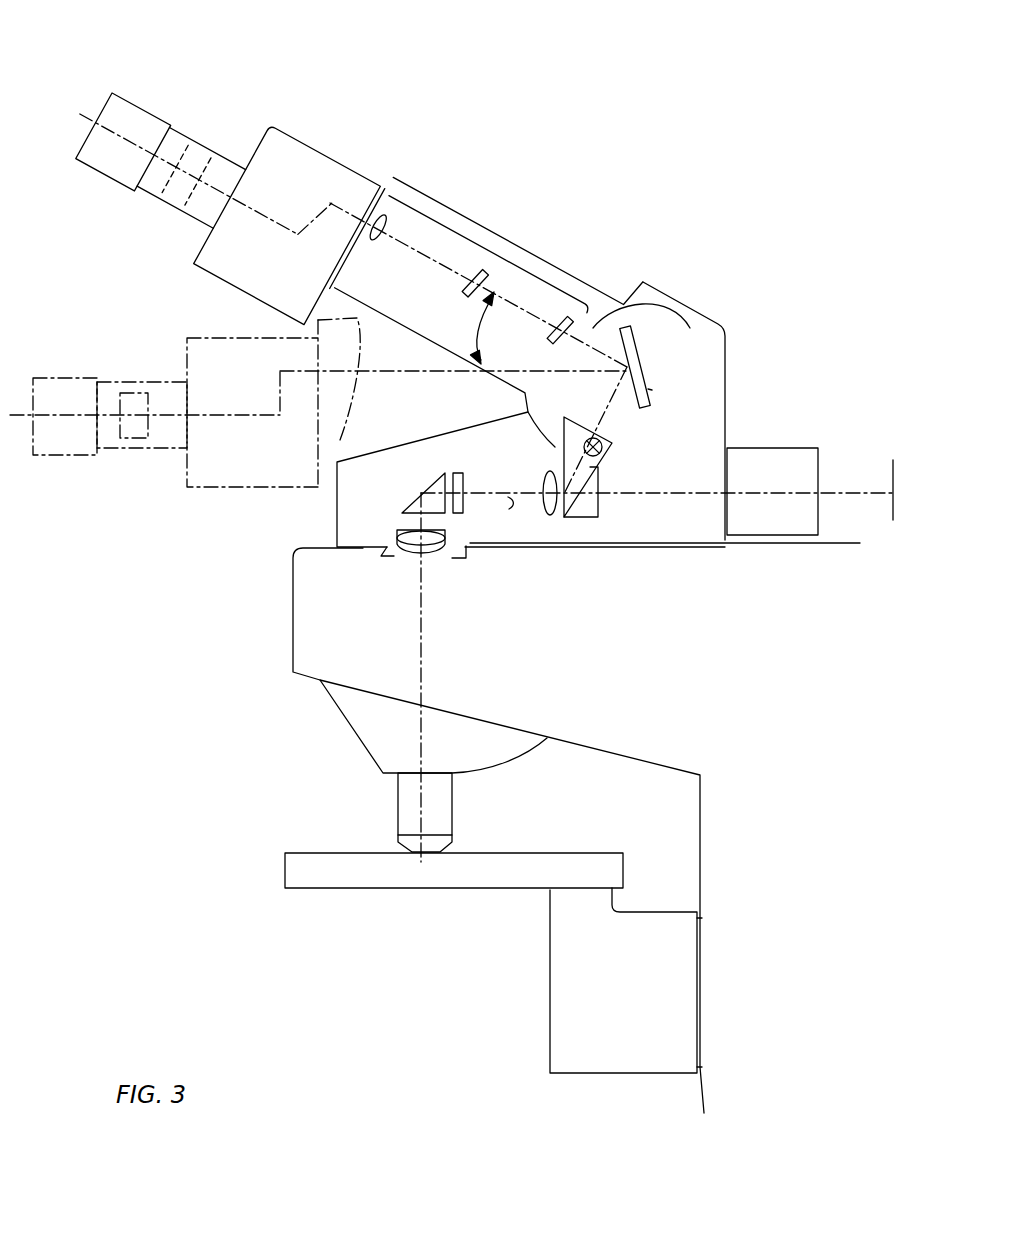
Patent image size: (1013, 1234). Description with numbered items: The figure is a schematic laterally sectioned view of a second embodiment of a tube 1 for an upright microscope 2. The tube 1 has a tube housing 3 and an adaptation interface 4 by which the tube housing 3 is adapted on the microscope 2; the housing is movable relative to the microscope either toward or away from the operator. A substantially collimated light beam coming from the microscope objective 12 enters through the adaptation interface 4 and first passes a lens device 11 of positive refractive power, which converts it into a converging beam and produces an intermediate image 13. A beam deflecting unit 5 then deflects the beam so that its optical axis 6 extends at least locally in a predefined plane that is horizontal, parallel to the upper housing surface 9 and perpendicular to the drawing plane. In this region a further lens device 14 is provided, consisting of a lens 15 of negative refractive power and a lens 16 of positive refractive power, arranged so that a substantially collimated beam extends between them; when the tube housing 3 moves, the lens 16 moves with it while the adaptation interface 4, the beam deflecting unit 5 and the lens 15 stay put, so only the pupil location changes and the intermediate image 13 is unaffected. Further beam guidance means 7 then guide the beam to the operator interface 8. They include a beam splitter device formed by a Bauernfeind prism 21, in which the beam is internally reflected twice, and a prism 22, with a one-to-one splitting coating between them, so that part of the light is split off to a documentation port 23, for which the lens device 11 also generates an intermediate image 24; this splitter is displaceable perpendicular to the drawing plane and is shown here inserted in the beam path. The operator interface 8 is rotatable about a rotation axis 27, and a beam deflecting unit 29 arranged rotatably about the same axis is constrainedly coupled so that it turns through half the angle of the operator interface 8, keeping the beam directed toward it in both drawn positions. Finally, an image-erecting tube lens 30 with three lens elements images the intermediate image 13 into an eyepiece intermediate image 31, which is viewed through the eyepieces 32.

The tube 1 is at (698, 433).
The upright microscope 2 is at (340, 640).
The tube housing 3 is at (435, 190).
The adaptation interface 4 is at (380, 554).
The beam deflecting unit 5 is at (418, 503).
The optical axis 6 is at (501, 515).
The further beam guidance means 7 is at (388, 190).
The operator interface 8 is at (158, 92).
The upper housing surface 9 is at (838, 543).
The lens device 11 is at (398, 536).
The microscope objective 12 is at (415, 808).
The intermediate image 13 is at (632, 304).
The further lens device 14 is at (459, 535).
The lens having negative refractive power 15 is at (457, 472).
The lens having positive refractive power 16 is at (549, 474).
The Bauernfeind prism 21 is at (600, 467).
The prism 22 is at (598, 518).
The documentation port 23 is at (802, 465).
The intermediate image 24 is at (892, 473).
The rotation axis 27 is at (640, 358).
The beam deflecting unit 29 is at (648, 389).
The tube lens 30 is at (483, 243).
The eyepiece intermediate image 31 is at (189, 141).
The eyepieces 32 is at (127, 92).